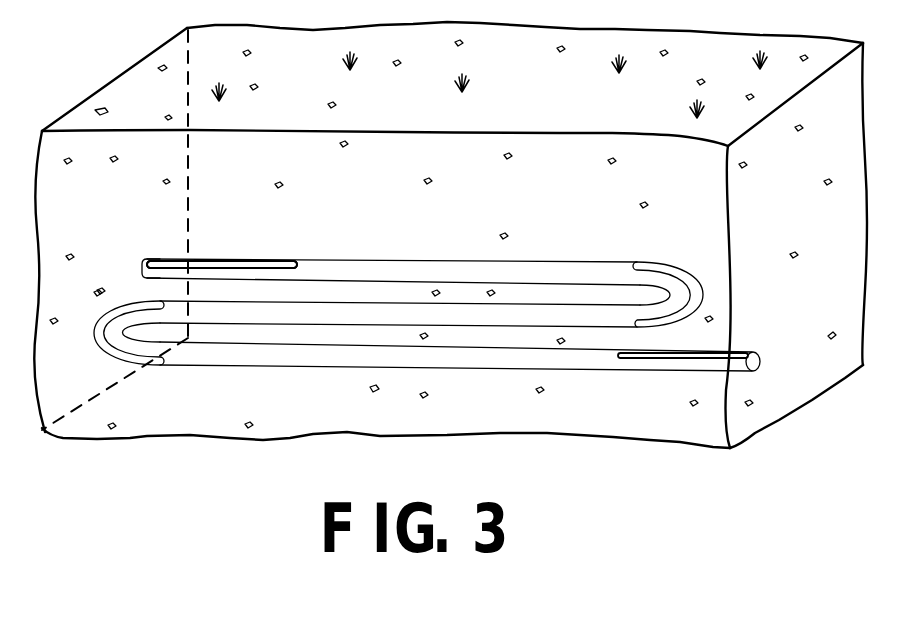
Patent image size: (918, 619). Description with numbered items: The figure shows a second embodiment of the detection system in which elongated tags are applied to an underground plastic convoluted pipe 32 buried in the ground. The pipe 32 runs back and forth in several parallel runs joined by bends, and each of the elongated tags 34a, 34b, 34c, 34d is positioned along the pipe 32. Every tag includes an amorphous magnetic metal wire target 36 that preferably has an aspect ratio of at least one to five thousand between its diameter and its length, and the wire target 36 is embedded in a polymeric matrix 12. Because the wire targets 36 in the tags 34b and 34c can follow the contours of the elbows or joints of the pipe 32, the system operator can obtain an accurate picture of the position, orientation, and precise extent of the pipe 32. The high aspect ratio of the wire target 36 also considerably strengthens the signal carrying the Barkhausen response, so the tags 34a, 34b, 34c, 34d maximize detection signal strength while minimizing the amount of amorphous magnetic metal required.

The polymeric matrix 12 is at (263, 268).
The underground plastic convoluted pipe 32 is at (361, 263).
The elongated tag 34a is at (157, 255).
The elongated tag 34b is at (652, 258).
The elongated tag 34c is at (86, 328).
The elongated tag 34d is at (641, 373).
The amorphous magnetic metal wire target 36 is at (217, 259).